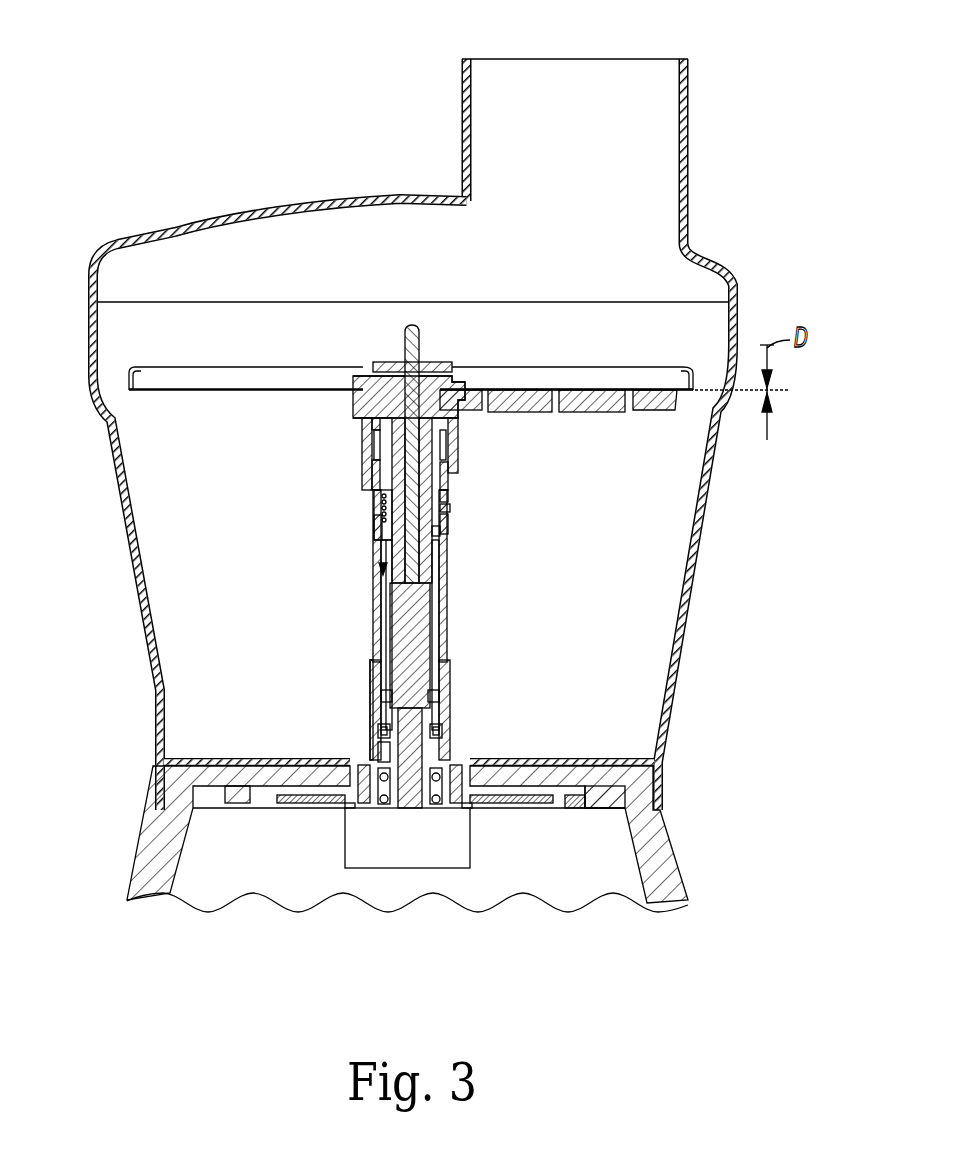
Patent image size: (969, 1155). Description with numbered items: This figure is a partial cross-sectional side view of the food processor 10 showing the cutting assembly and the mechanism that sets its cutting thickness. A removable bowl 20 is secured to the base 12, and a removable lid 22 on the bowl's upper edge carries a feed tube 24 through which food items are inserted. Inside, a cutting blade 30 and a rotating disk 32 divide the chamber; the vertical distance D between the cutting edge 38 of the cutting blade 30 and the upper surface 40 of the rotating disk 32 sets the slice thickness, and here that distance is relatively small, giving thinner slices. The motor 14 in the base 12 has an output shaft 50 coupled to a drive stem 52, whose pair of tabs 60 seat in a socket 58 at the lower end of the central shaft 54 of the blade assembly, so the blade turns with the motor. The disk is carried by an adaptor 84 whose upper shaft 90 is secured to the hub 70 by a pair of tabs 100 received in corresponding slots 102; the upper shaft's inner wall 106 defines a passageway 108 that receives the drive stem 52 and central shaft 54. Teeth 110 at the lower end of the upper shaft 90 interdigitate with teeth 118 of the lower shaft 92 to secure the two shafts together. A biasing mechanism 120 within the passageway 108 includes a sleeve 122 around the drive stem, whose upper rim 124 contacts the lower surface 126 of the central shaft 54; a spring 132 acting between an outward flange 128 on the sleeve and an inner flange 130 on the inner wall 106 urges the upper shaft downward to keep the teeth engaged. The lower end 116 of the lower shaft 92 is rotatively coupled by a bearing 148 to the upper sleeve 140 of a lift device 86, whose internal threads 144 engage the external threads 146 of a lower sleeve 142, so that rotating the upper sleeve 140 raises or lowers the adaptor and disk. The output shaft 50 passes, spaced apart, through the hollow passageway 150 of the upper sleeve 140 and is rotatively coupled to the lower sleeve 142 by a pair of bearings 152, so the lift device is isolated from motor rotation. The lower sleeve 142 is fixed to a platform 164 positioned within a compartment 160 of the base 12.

The food processor 10 is at (178, 105).
The base 12 is at (668, 866).
The motor 14 is at (470, 862).
The bowl 20 is at (720, 484).
The lid 22 is at (712, 250).
The feed tube 24 is at (689, 86).
The cutting blade 30 is at (535, 391).
The rotating disk 32 is at (480, 368).
The cutting edge 38 is at (583, 391).
The upper surface 40 is at (678, 372).
The output shaft 50 is at (448, 625).
The drive stem 52 is at (375, 600).
The central shaft 54 is at (458, 442).
The socket 58 is at (460, 466).
The tabs 60 is at (462, 488).
The hub 70 is at (352, 406).
The adaptor 84 is at (277, 560).
The lift device 86 is at (478, 742).
The upper shaft 90 is at (450, 592).
The lower shaft 92 is at (450, 692).
The tabs 100 is at (366, 466).
The slot 102 is at (363, 482).
The inner wall 106 is at (450, 572).
The passageway 108 is at (383, 568).
The teeth 110 is at (375, 682).
The lower end 116 is at (378, 735).
The teeth 118 is at (377, 697).
The biasing mechanism 120 is at (366, 523).
The sleeve 122 is at (462, 532).
The upper rim 124 is at (378, 497).
The lower surface 126 is at (462, 502).
The flange 128 is at (462, 517).
The inner flange 130 is at (452, 532).
The spring 132 is at (377, 527).
The upper sleeve 140 is at (455, 732).
The lower sleeve 142 is at (470, 820).
The internal threads 144 is at (380, 750).
The external threads 146 is at (345, 818).
The bearing 148 is at (447, 715).
The hollow passageway 150 is at (472, 762).
The bearings 152 is at (332, 798).
The compartment 160 is at (248, 797).
The platform 164 is at (590, 766).